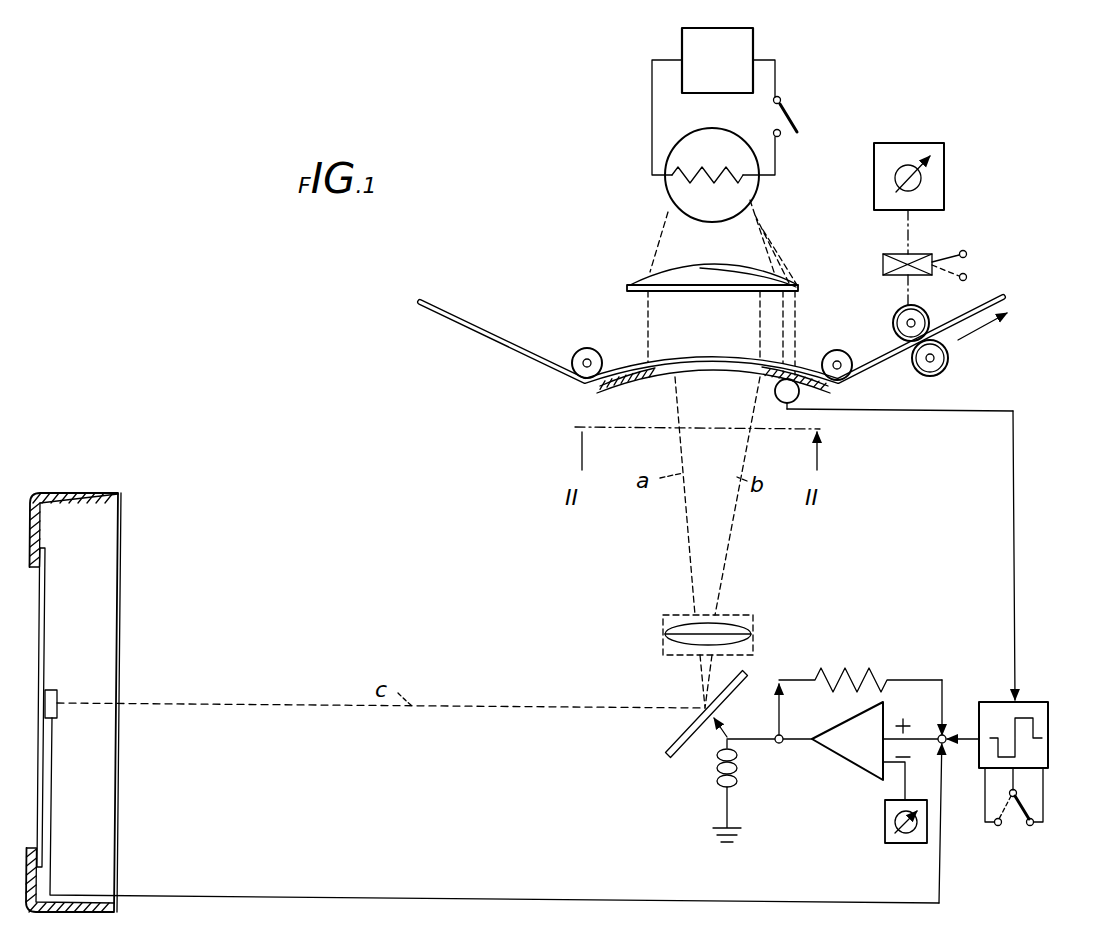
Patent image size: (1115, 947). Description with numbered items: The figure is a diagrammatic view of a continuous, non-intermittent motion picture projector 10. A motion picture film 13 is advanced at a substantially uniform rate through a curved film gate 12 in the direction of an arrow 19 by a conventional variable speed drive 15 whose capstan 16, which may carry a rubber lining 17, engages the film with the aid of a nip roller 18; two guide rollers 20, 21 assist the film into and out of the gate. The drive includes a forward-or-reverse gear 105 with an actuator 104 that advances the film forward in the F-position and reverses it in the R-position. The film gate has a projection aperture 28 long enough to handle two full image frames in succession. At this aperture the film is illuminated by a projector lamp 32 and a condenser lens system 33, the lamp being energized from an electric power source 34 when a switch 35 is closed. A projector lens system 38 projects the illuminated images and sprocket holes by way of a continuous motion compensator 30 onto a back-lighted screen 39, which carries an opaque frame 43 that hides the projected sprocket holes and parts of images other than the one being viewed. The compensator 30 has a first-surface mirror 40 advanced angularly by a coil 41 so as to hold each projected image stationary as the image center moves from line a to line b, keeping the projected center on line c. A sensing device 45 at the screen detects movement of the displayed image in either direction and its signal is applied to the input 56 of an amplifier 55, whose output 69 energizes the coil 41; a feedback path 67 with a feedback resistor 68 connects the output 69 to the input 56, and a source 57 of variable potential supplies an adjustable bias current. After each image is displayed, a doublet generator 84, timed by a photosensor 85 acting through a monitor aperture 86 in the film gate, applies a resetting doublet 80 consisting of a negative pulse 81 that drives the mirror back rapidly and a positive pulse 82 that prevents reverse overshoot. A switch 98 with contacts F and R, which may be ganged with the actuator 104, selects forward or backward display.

The continuous motion picture projector 10 is at (492, 586).
The film gate 12 is at (676, 365).
The motion picture film 13 is at (478, 334).
The variable speed drive 15 is at (874, 184).
The capstan 16 is at (906, 323).
The rubber lining 17 is at (905, 306).
The nip roller 18 is at (948, 364).
The arrow 19 is at (980, 330).
The guide roller 20 is at (582, 348).
The guide roller 21 is at (850, 374).
The projection aperture 28 is at (660, 384).
The continuous motion compensator 30 is at (707, 757).
The projector lamp 32 is at (668, 186).
The condenser lens system 33 is at (630, 284).
The electric power source 34 is at (682, 46).
The switch 35 is at (793, 118).
The projector lens system 38 is at (665, 636).
The back-lighted screen 39 is at (46, 592).
The first-surface mirror 40 is at (672, 746).
The coil 41 is at (717, 776).
The opaque frame 43 is at (75, 494).
The sensing device 45 is at (57, 692).
The amplifier 55 is at (842, 720).
The amplifier input 56 is at (946, 735).
The source of variable electric potential 57 is at (885, 826).
The feedback path 67 is at (944, 678).
The feedback resistor 68 is at (868, 656).
The amplifier output 69 is at (780, 745).
The resetting doublet 80 is at (940, 634).
The negative pulse 81 is at (993, 760).
The positive pulse 82 is at (1040, 724).
The doublet generator 84 is at (1022, 702).
The photosensor 85 is at (778, 398).
The monitor aperture 86 is at (790, 372).
The switch 98 is at (1025, 810).
The actuator 104 is at (952, 262).
The forward-or-reverse gear 105 is at (883, 260).